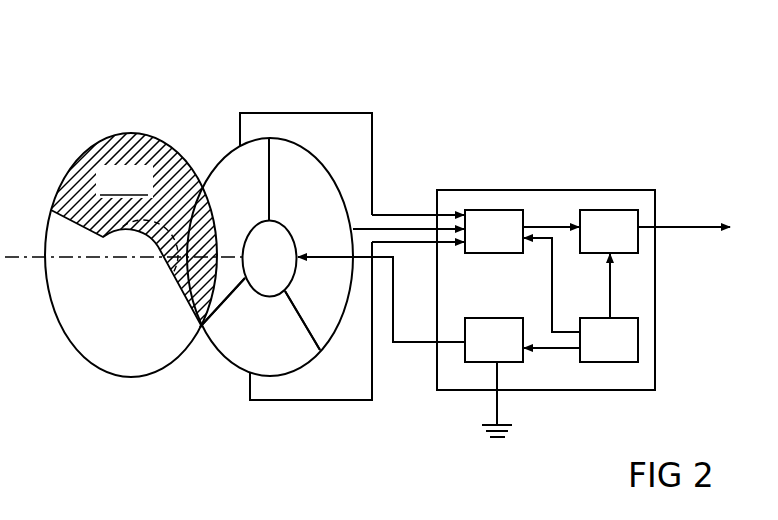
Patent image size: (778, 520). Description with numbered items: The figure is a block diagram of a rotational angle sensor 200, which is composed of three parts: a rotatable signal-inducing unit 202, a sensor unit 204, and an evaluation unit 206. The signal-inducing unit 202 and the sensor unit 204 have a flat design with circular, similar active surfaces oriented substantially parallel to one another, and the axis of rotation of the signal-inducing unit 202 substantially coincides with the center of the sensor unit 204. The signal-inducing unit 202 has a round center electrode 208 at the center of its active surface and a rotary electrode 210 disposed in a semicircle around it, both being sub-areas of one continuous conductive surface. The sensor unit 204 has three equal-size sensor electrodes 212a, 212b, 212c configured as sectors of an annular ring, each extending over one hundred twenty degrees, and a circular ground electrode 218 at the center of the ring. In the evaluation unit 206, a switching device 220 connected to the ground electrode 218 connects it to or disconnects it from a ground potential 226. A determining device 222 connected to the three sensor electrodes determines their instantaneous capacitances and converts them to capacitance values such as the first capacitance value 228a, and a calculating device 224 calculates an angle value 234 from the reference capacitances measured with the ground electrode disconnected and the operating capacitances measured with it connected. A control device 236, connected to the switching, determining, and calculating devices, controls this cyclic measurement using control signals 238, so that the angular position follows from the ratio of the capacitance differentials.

The rotational angle sensor 200 is at (311, 63).
The signal-inducing unit 202 is at (96, 145).
The sensor unit 204 is at (222, 157).
The evaluation unit 206 is at (470, 190).
The center electrode 208 is at (127, 297).
The rotary electrode 210 is at (148, 195).
The first sensor electrode 212a is at (258, 192).
The second sensor electrode 212b is at (321, 192).
The third sensor electrode 212c is at (284, 337).
The ground electrode 218 is at (292, 274).
The switching device 220 is at (494, 340).
The determining device 222 is at (494, 231).
The calculating device 224 is at (609, 231).
The ground potential 226 is at (515, 399).
The first capacitance value 228a is at (546, 226).
The angle value 234 is at (684, 217).
The control device 236 is at (609, 340).
The control signals 238 is at (584, 286).